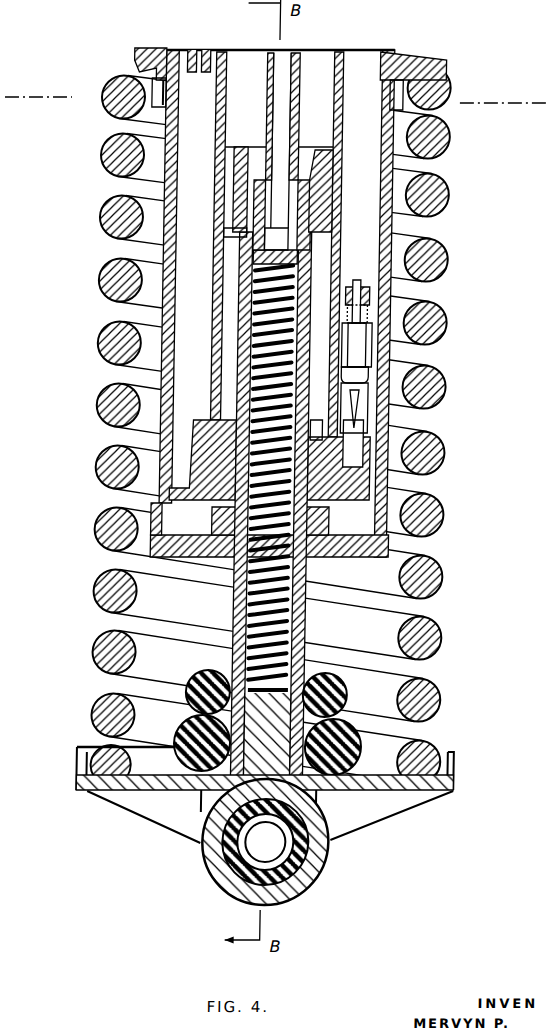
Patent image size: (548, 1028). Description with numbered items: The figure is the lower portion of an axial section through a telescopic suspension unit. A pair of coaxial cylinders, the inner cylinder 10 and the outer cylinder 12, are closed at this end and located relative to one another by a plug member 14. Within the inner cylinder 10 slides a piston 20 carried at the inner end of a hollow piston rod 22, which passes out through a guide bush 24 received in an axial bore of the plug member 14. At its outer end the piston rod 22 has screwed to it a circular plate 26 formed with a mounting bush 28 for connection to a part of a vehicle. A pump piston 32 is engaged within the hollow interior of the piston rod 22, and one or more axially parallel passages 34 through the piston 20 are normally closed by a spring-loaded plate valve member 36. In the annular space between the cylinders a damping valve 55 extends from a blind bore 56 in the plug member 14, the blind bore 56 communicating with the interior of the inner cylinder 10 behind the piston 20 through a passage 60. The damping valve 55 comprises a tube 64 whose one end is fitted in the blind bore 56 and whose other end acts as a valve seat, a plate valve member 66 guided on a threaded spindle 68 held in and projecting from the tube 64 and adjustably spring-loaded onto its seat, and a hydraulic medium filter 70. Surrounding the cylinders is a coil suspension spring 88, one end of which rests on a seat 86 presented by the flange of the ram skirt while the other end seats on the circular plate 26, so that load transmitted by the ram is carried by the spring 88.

The inner cylinder 10 is at (210, 275).
The outer cylinder 12 is at (168, 347).
The plug member 14 is at (184, 518).
The piston 20 is at (316, 216).
The hollow piston rod 22 is at (243, 333).
The guide bush 24 is at (232, 420).
The circular plate 26 is at (141, 793).
The mounting bush 28 is at (224, 852).
The pump piston 32 is at (299, 193).
The axially parallel passages 34 is at (222, 186).
The spring-loaded plate valve member 36 is at (214, 243).
The damping valve 55 is at (356, 373).
The blind bore 56 is at (355, 453).
The passage 60 is at (323, 427).
The tube 64 is at (371, 392).
The plate valve member 66 is at (366, 328).
The threaded spindle 68 is at (351, 355).
The hydraulic medium filter 70 is at (362, 412).
The seat 86 is at (120, 84).
The coil suspension spring 88 is at (103, 152).